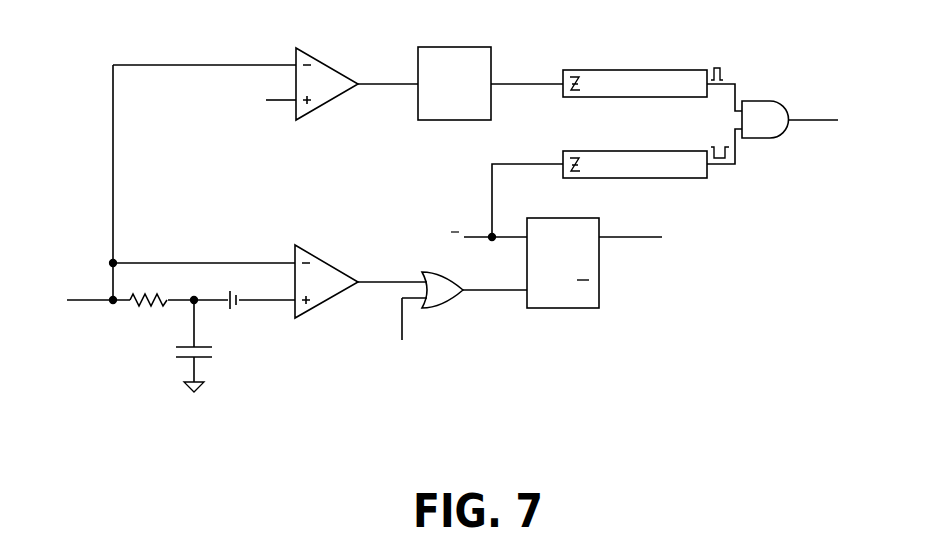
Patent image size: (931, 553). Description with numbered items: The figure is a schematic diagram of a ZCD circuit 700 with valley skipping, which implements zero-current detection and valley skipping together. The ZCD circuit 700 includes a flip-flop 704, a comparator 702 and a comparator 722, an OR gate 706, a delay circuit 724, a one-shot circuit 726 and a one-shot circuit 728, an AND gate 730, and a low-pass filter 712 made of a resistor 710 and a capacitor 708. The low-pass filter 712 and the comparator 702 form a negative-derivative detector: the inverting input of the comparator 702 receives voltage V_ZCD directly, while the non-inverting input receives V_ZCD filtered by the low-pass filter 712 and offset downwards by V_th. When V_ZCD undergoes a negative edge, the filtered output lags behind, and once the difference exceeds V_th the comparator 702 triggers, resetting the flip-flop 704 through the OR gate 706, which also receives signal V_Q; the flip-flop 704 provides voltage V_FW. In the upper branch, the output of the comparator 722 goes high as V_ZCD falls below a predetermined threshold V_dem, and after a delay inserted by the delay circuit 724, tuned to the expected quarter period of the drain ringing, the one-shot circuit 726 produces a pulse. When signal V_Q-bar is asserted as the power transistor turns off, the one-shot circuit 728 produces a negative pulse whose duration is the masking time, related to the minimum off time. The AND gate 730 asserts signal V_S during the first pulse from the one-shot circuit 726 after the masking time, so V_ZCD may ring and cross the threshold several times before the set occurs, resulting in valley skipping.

The ZCD circuit 700 is at (76, 49).
The comparator 702 is at (322, 257).
The flip-flop 704 is at (556, 218).
The OR gate 706 is at (433, 308).
The capacitor 708 is at (212, 357).
The resistor 710 is at (136, 306).
The low-pass filter 712 is at (142, 346).
The comparator 722 is at (321, 58).
The delay circuit 724 is at (448, 47).
The one-shot circuit 726 is at (648, 69).
The one-shot circuit 728 is at (648, 151).
The AND gate 730 is at (783, 104).